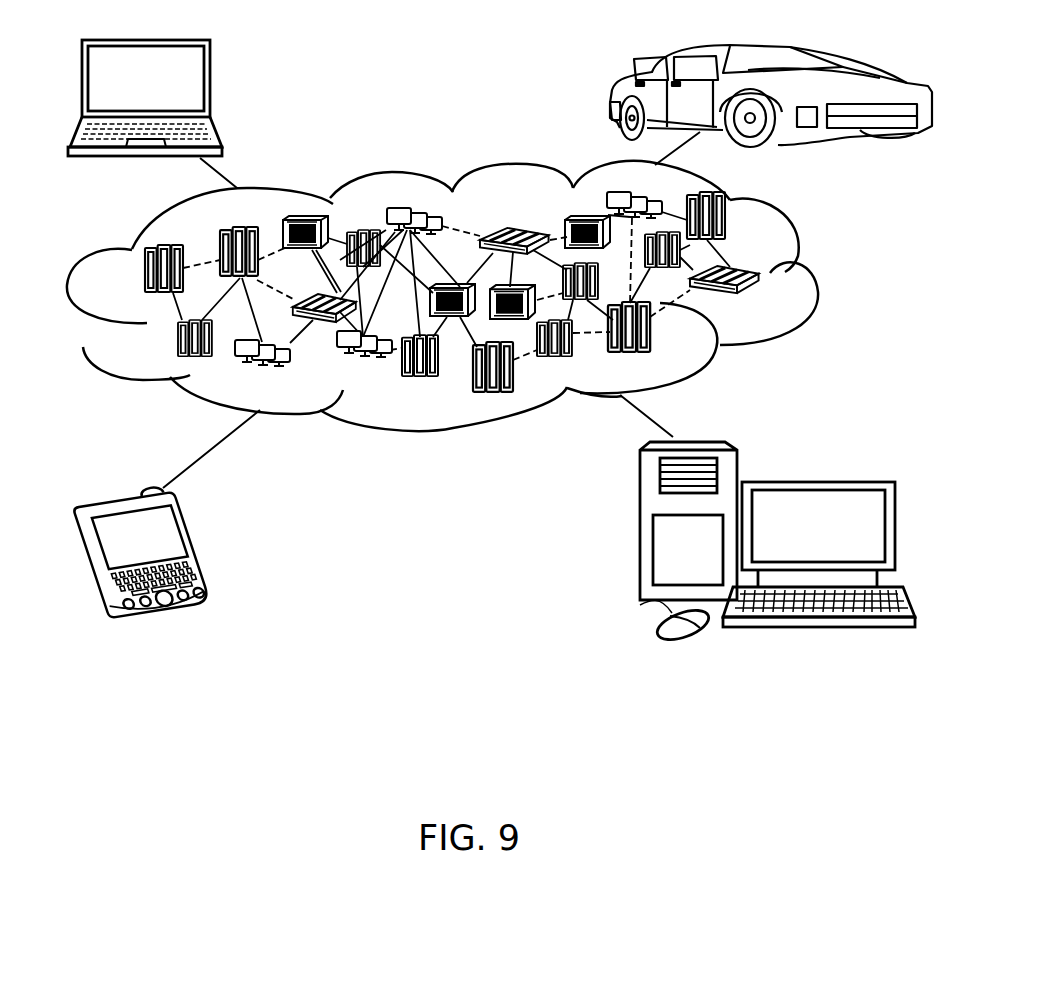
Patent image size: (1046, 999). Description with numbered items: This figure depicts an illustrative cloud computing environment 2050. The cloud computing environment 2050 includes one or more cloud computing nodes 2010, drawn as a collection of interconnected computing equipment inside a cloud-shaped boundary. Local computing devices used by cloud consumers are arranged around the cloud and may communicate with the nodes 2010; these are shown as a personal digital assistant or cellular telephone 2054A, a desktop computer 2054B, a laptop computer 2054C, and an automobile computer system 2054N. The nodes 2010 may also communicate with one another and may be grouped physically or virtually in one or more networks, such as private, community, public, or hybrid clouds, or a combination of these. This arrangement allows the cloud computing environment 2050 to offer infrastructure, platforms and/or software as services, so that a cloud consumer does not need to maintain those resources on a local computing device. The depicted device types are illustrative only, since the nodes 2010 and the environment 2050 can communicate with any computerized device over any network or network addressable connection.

The cloud computing environment 2050 is at (812, 279).
The cloud computing nodes 2010 is at (762, 298).
The personal digital assistant or cellular telephone 2054A is at (202, 547).
The desktop computer 2054B is at (824, 465).
The laptop computer 2054C is at (210, 84).
The automobile computer system 2054N is at (612, 95).